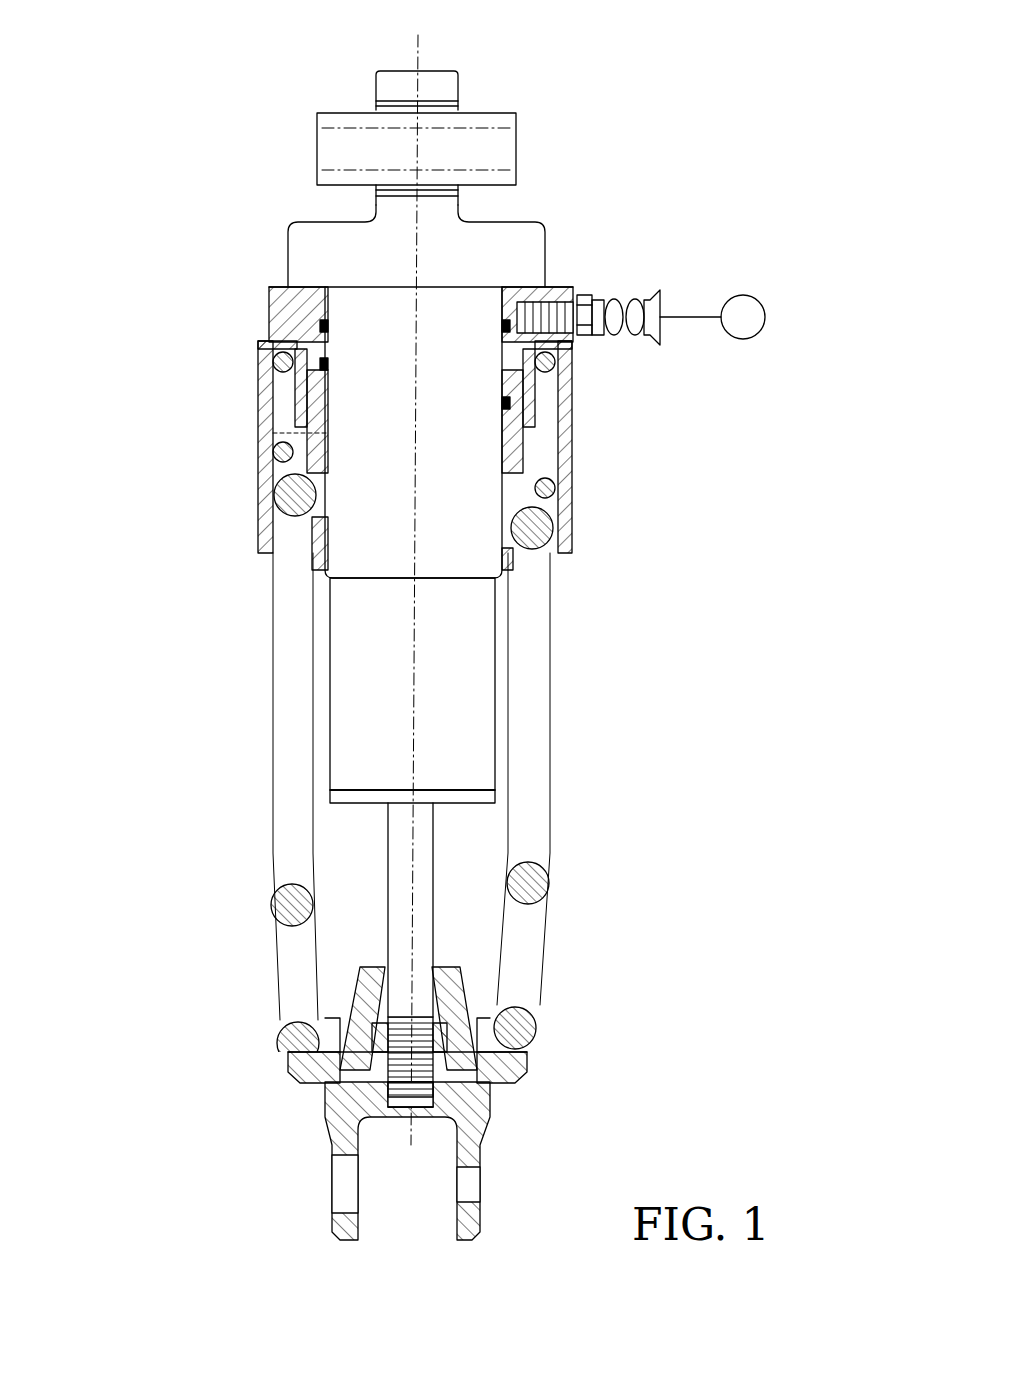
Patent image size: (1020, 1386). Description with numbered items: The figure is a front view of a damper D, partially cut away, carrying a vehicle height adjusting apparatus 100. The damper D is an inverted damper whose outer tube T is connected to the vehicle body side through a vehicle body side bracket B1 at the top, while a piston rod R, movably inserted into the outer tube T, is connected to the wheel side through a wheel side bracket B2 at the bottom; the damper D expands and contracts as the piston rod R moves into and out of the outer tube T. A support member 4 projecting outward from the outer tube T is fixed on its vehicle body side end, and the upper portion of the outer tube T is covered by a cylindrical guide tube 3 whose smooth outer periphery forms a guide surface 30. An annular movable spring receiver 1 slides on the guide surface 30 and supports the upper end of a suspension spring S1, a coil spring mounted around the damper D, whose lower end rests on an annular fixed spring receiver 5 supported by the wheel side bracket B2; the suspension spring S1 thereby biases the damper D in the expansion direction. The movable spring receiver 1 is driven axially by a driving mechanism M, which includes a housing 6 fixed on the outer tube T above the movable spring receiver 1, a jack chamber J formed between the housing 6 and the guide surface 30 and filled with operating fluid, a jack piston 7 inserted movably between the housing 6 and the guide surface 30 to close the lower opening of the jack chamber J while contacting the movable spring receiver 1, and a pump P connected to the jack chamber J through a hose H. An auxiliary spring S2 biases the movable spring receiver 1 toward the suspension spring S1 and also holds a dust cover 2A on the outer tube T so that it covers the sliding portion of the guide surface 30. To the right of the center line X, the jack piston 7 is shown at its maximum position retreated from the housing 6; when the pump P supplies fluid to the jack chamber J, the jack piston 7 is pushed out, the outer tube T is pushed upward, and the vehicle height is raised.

The vehicle height adjusting apparatus 100 is at (160, 283).
The center line X is at (420, 52).
The vehicle body side bracket B1 is at (497, 115).
The support member 4 is at (300, 250).
The housing 6 is at (272, 308).
The guide tube 3 is at (324, 572).
The dust cover 2A is at (572, 488).
The driving mechanism M is at (293, 396).
The jack chamber J is at (515, 380).
The jack piston 7 is at (530, 463).
The auxiliary spring S2 is at (258, 364).
The guide surface 30 is at (267, 433).
The movable spring receiver 1 is at (263, 488).
The outer tube T is at (478, 657).
The piston rod R is at (427, 940).
The damper D is at (325, 723).
The suspension spring S1 is at (550, 883).
The fixed spring receiver 5 is at (318, 1060).
The wheel side bracket B2 is at (470, 1152).
The hose H is at (643, 292).
The pump P is at (752, 293).